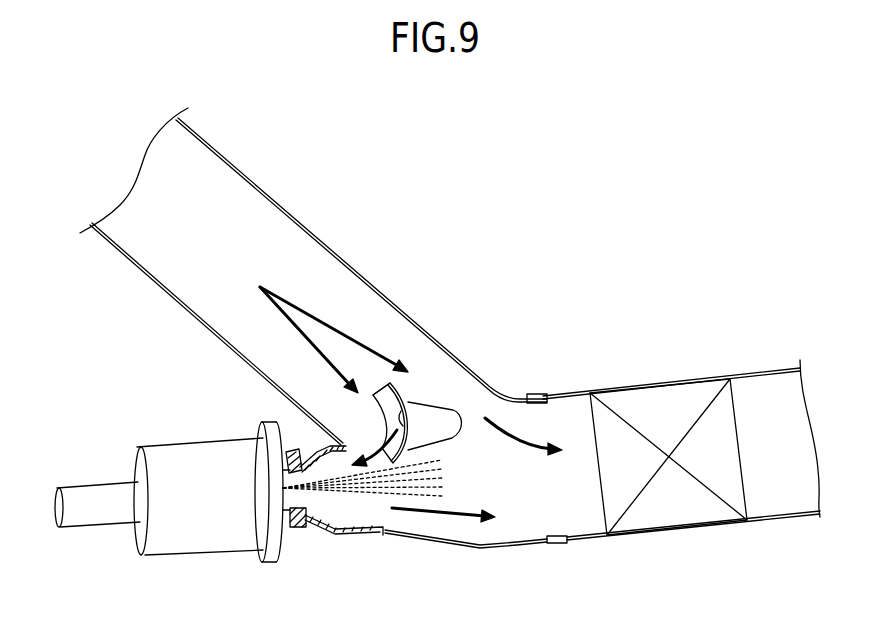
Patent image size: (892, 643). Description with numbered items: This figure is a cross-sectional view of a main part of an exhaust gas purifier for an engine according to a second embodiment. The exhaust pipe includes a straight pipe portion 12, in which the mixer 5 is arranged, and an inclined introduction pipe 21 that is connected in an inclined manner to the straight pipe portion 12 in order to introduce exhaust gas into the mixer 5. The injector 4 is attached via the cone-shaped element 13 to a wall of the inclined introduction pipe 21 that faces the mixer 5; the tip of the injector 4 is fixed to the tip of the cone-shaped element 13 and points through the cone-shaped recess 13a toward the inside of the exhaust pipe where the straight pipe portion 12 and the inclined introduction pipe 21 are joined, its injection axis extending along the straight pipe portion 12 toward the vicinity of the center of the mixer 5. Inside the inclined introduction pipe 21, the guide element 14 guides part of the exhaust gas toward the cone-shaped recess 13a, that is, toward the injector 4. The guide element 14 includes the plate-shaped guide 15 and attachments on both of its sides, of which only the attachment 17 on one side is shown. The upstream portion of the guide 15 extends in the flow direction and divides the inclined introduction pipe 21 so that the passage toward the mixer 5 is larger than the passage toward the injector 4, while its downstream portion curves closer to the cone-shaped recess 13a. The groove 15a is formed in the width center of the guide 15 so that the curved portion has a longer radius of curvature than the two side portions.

The injector 4 is at (162, 445).
The mixer 5 is at (667, 393).
The straight pipe portion 12 is at (763, 368).
The cone-shaped element 13 is at (353, 530).
The cone-shaped recess 13a is at (318, 522).
The guide element 14 is at (428, 400).
The guide 15 is at (380, 400).
The groove 15a is at (403, 420).
The attachment 17 is at (457, 427).
The inclined introduction pipe 21 is at (260, 187).